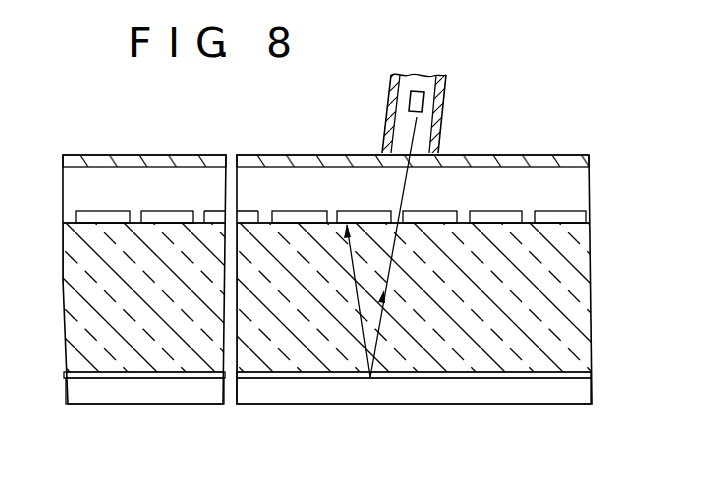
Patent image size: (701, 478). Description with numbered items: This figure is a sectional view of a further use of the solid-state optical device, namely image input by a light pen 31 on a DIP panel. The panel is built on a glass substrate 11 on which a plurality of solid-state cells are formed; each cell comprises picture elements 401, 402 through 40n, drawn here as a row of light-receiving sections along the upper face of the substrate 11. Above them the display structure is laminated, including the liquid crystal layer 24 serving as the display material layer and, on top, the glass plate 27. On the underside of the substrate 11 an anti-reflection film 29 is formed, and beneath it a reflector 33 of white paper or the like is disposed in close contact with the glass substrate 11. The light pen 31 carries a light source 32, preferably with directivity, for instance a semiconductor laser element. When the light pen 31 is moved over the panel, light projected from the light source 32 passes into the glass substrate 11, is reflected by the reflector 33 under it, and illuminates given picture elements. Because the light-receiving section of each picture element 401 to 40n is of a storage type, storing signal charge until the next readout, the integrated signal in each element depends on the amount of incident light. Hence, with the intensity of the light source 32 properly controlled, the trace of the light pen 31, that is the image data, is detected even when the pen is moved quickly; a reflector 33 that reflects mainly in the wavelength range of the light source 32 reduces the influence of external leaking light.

The glass substrate 11 is at (582, 283).
The liquid crystal layer 24 is at (580, 180).
The glass plate 27 is at (537, 158).
The anti-reflection film 29 is at (583, 372).
The reflector 33 is at (583, 392).
The picture element 401 is at (98, 212).
The picture element 402 is at (161, 212).
The picture element 40n is at (553, 212).
The light pen 31 is at (446, 96).
The light source 32 is at (410, 101).